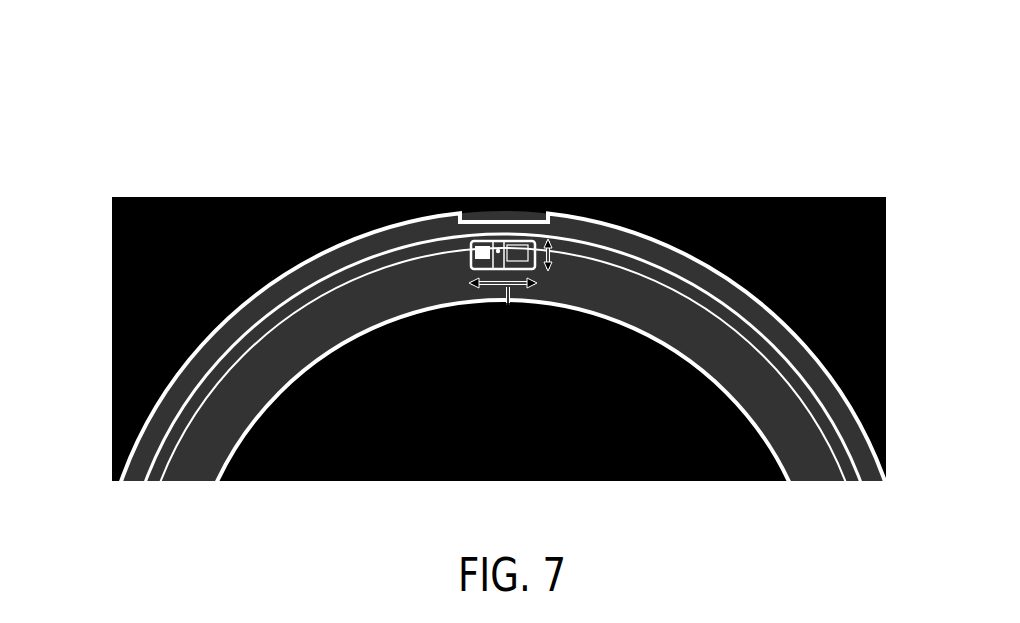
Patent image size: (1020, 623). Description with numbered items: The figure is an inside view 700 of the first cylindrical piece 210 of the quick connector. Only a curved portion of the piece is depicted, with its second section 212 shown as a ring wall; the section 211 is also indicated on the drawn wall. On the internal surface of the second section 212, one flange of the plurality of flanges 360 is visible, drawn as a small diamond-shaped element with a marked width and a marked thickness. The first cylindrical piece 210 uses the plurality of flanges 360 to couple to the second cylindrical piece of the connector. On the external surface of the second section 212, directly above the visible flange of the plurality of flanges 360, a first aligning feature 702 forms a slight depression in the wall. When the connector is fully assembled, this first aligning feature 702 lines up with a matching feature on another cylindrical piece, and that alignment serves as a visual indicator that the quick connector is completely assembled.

The inside view 700 is at (122, 48).
The first aligning feature 702 is at (515, 213).
The first cylindrical piece 210 is at (822, 256).
The second section 212 is at (772, 317).
The inner housing wall 211 is at (280, 368).
The plurality of flanges 360 is at (446, 259).